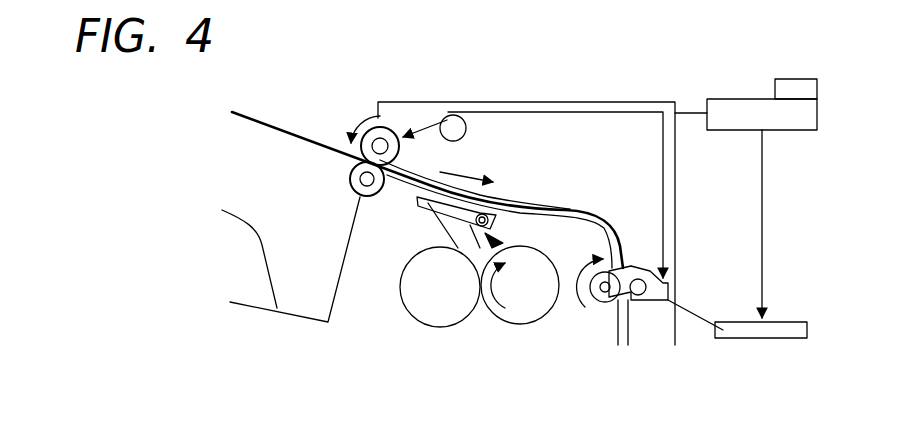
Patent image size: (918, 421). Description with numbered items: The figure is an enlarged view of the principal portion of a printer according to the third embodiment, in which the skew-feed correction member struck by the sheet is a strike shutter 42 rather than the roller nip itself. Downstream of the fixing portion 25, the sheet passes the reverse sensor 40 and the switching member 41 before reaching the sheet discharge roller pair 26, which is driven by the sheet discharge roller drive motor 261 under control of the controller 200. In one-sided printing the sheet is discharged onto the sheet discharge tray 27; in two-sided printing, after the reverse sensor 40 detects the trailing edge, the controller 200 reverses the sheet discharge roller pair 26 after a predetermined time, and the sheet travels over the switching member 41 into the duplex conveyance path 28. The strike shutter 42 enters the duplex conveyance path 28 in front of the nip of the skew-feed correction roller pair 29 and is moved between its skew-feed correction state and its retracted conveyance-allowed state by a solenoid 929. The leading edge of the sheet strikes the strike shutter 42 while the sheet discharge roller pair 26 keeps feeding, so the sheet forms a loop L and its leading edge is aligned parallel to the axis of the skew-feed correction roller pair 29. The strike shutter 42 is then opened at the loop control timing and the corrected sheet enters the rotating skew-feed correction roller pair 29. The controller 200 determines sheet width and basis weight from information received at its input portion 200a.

The sheet discharge roller pair 26 is at (378, 126).
The sheet discharge roller drive motor 261 is at (451, 116).
The reverse sensor 40 is at (503, 200).
The fixing portion 25 is at (530, 244).
The duplex conveyance path 28 is at (603, 213).
The loop L is at (619, 244).
The strike shutter 42 is at (633, 267).
The skew-feed correction roller pair 29 is at (648, 284).
The controller 200 is at (743, 98).
The input portion 200a is at (800, 79).
The solenoid 929 is at (767, 340).
The sheet discharge tray 27 is at (278, 259).
The switching member 41 is at (428, 203).